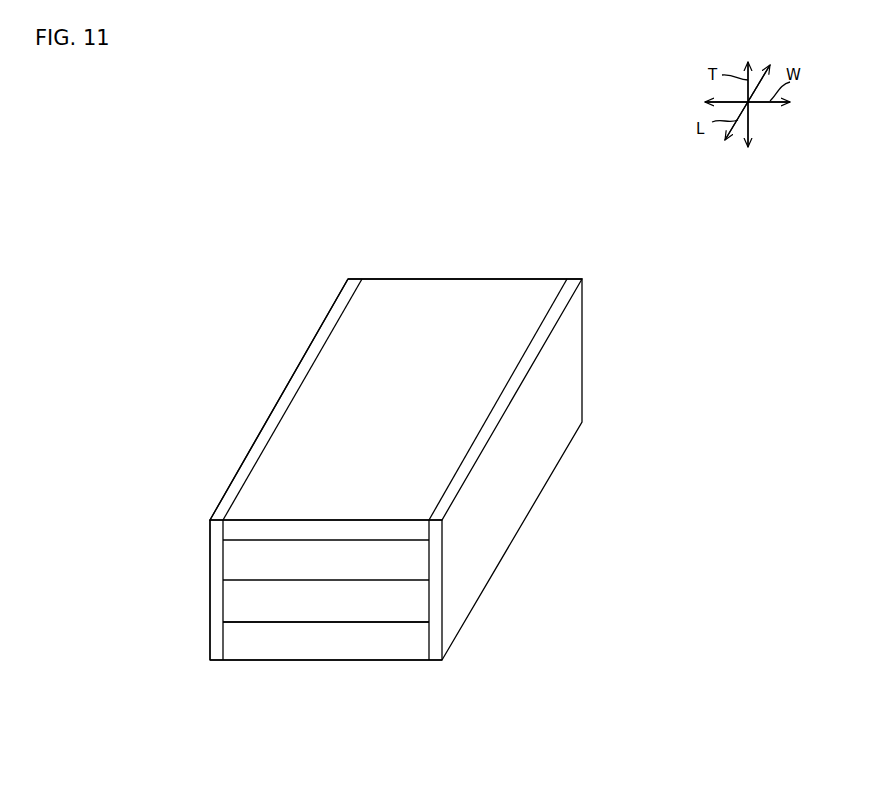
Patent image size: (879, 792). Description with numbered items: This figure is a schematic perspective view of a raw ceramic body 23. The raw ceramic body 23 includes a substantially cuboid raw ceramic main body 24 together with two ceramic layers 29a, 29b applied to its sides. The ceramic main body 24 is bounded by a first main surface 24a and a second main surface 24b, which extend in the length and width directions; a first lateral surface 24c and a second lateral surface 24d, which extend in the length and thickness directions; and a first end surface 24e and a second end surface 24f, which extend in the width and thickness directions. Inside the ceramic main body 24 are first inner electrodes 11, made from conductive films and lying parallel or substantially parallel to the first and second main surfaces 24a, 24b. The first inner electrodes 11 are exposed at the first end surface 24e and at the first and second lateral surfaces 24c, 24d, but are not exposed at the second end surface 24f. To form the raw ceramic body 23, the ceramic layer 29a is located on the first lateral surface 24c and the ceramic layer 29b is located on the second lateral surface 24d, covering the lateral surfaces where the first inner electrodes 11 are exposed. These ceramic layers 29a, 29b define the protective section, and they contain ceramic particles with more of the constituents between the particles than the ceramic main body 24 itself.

The first inner electrode 11 is at (395, 622).
The raw ceramic body 23 is at (229, 668).
The ceramic main body 24 is at (395, 470).
The first main surface 24a is at (530, 298).
The second main surface 24b is at (355, 660).
The first lateral surface 24c is at (260, 448).
The second lateral surface 24d is at (490, 413).
The first end surface 24e is at (293, 643).
The second end surface 24f is at (423, 279).
The ceramic layer 29a is at (285, 383).
The ceramic layer 29b is at (492, 533).